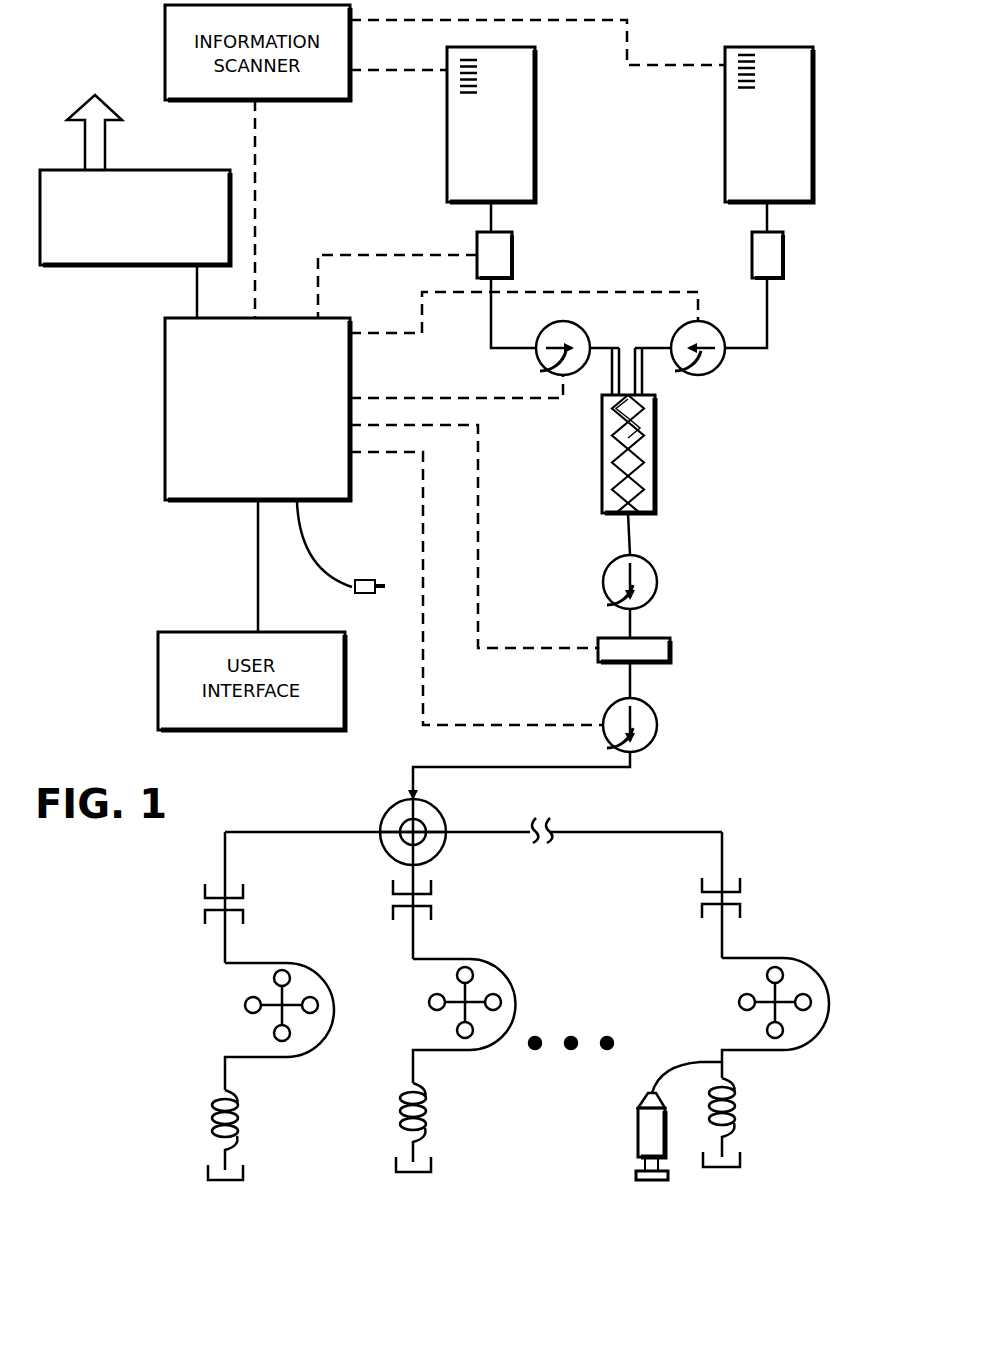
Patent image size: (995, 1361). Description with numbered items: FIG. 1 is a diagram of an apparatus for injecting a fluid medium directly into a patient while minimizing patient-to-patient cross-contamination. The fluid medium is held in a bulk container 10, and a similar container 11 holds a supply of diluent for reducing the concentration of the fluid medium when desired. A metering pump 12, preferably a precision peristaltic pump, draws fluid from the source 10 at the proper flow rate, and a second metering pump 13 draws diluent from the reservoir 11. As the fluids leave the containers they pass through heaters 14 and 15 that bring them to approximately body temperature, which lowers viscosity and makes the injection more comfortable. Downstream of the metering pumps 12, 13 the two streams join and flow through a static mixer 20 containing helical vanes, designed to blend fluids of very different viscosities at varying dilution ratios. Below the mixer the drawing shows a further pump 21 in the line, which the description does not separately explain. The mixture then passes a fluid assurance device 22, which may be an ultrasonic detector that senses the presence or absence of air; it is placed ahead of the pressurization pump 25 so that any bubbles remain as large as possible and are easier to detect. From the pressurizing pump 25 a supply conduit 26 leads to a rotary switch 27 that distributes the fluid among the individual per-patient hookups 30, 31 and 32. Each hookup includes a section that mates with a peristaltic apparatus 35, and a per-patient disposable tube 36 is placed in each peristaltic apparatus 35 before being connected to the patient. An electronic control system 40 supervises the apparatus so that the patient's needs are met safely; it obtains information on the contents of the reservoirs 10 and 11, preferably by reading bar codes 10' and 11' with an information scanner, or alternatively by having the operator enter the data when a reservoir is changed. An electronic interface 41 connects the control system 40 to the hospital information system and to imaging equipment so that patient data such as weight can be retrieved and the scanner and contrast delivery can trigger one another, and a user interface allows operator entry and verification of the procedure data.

The bulk container 10 is at (520, 124).
The bar code 10' is at (489, 89).
The container 11 is at (753, 106).
The bar code 11' is at (766, 85).
The metering pump 12 is at (574, 323).
The second metering pump 13 is at (715, 368).
The heater 14 is at (512, 250).
The heater 15 is at (752, 252).
The static mixer 20 is at (648, 433).
The third pump 21 is at (653, 570).
The fluid assurance device 22 is at (670, 652).
The pressurization pump 25 is at (653, 713).
The supply conduit 26 is at (473, 767).
The rotary switch 27 is at (442, 816).
The per patient hookup 30 is at (196, 1100).
The per patient hookup 31 is at (396, 1082).
The per patient hookup 32 is at (758, 1070).
The peristaltic apparatus 35 is at (245, 1028).
The per patient disposable tube 36 is at (243, 1124).
The electronic control system 40 is at (243, 479).
The electronic interface 41 is at (128, 268).